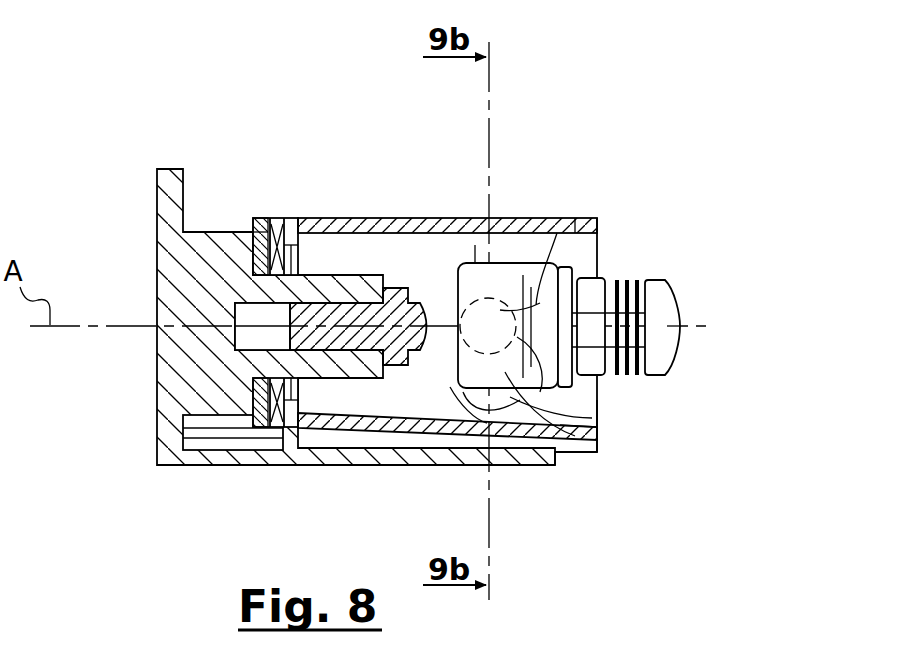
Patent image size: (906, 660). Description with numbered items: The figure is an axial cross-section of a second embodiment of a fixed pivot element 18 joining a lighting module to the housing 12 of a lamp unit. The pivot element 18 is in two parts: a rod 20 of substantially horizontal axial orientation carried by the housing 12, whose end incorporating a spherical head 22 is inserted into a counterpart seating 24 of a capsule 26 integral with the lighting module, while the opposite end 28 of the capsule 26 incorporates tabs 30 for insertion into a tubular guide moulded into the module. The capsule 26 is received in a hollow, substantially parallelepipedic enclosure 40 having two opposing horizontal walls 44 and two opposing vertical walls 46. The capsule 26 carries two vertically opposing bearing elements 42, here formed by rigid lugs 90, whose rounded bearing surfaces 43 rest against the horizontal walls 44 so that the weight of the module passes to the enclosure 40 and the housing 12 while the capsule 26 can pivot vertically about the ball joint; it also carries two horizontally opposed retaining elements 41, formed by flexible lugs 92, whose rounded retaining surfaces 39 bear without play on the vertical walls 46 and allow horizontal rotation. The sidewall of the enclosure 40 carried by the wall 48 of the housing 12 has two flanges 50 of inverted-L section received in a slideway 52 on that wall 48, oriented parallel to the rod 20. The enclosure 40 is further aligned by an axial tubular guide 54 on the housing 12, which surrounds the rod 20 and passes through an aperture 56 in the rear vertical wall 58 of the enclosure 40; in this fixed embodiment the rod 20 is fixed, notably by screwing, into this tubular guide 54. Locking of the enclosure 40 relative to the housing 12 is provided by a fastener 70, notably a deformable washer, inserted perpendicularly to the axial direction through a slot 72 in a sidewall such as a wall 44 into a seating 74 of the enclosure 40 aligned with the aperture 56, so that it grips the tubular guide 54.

The housing 12 is at (186, 191).
The pivot element 18 is at (440, 360).
The rod 20 is at (431, 300).
The spherical head 22 is at (577, 232).
The seating 24 is at (598, 413).
The capsule 26 is at (686, 306).
The opposite end 28 is at (687, 355).
The tabs 30 is at (640, 278).
The retaining surface 39 is at (568, 440).
The enclosure 40 is at (437, 214).
The retaining element 41 is at (556, 314).
The bearing element 42 is at (520, 237).
The bearing surface 43 is at (497, 247).
The horizontal wall 44 is at (342, 218).
The vertical wall 46 is at (466, 262).
The wall 48 is at (232, 442).
The flange 50 is at (347, 440).
The slideway 52 is at (213, 447).
The tubular guide 54 is at (317, 360).
The aperture 56 is at (265, 222).
The rear vertical wall 58 is at (255, 218).
The fastener 70 is at (272, 427).
The slot 72 is at (272, 222).
The seating 74 is at (253, 255).
The rigid lug 90 is at (478, 242).
The flexible lug 92 is at (466, 395).